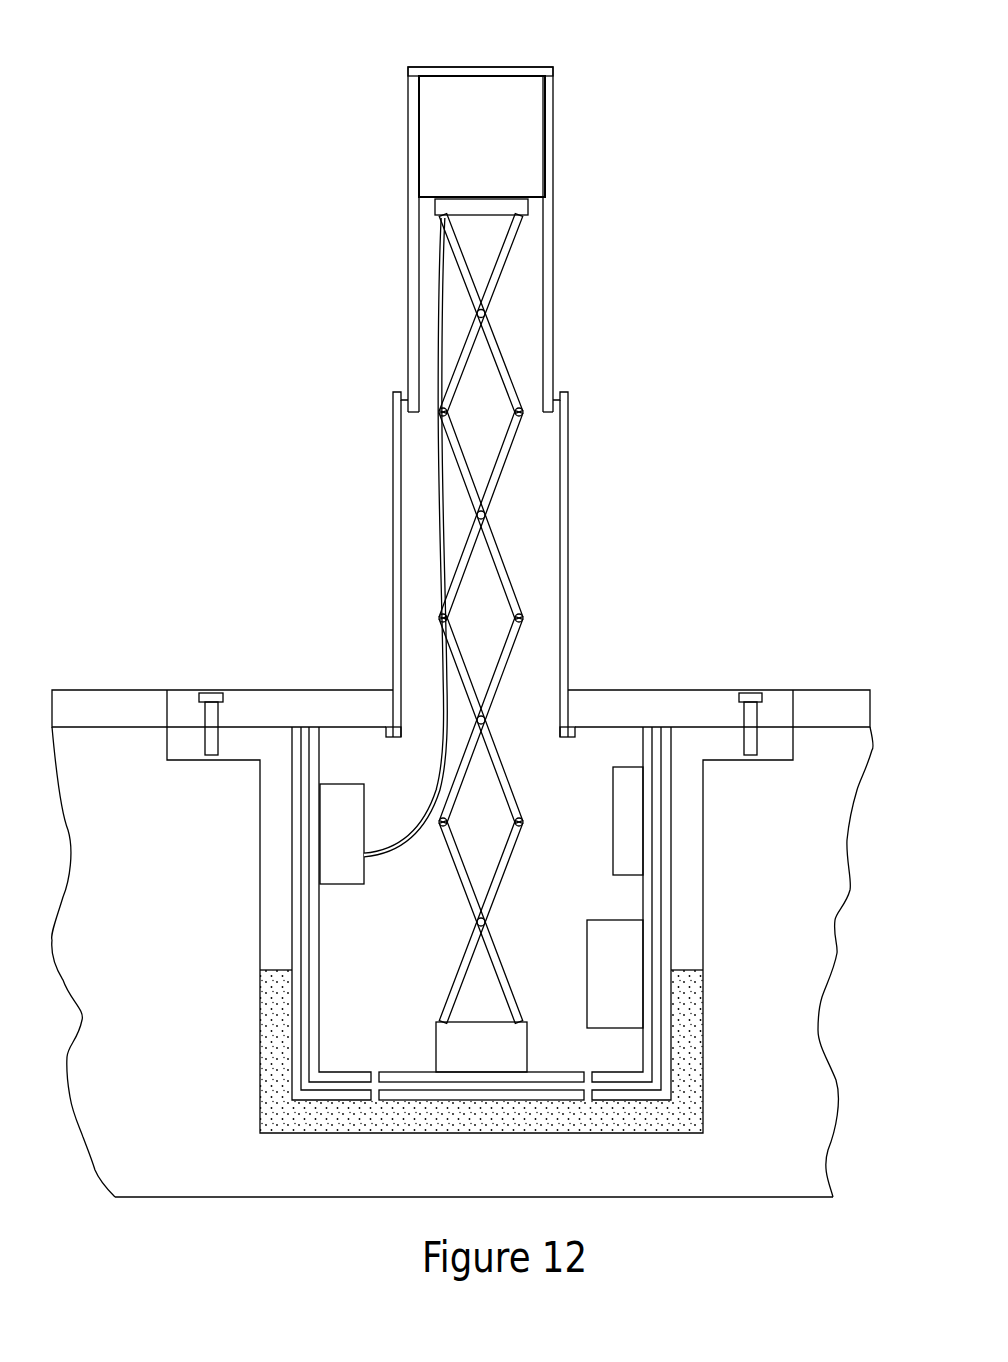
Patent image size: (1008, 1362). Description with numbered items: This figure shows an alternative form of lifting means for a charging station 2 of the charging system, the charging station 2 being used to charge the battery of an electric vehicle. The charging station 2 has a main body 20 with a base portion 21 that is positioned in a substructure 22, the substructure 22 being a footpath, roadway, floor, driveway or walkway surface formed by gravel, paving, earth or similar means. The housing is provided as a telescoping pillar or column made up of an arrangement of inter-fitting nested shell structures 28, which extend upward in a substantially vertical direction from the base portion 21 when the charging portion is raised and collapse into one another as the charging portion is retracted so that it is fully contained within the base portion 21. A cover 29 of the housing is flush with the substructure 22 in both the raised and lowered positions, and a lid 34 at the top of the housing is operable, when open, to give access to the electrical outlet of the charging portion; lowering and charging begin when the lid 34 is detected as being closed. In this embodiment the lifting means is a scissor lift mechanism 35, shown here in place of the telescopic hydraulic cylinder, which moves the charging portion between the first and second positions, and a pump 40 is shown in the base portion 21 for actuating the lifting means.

The charging station 2 is at (526, 536).
The main body 20 is at (572, 895).
The base portion 21 is at (680, 951).
The substructure 22 is at (508, 128).
The inter-fitting nested shell structures 28 is at (550, 325).
The cover 29 is at (682, 690).
The lid 34 is at (474, 67).
The scissor lift mechanism 35 is at (505, 452).
The pump 40 is at (335, 812).